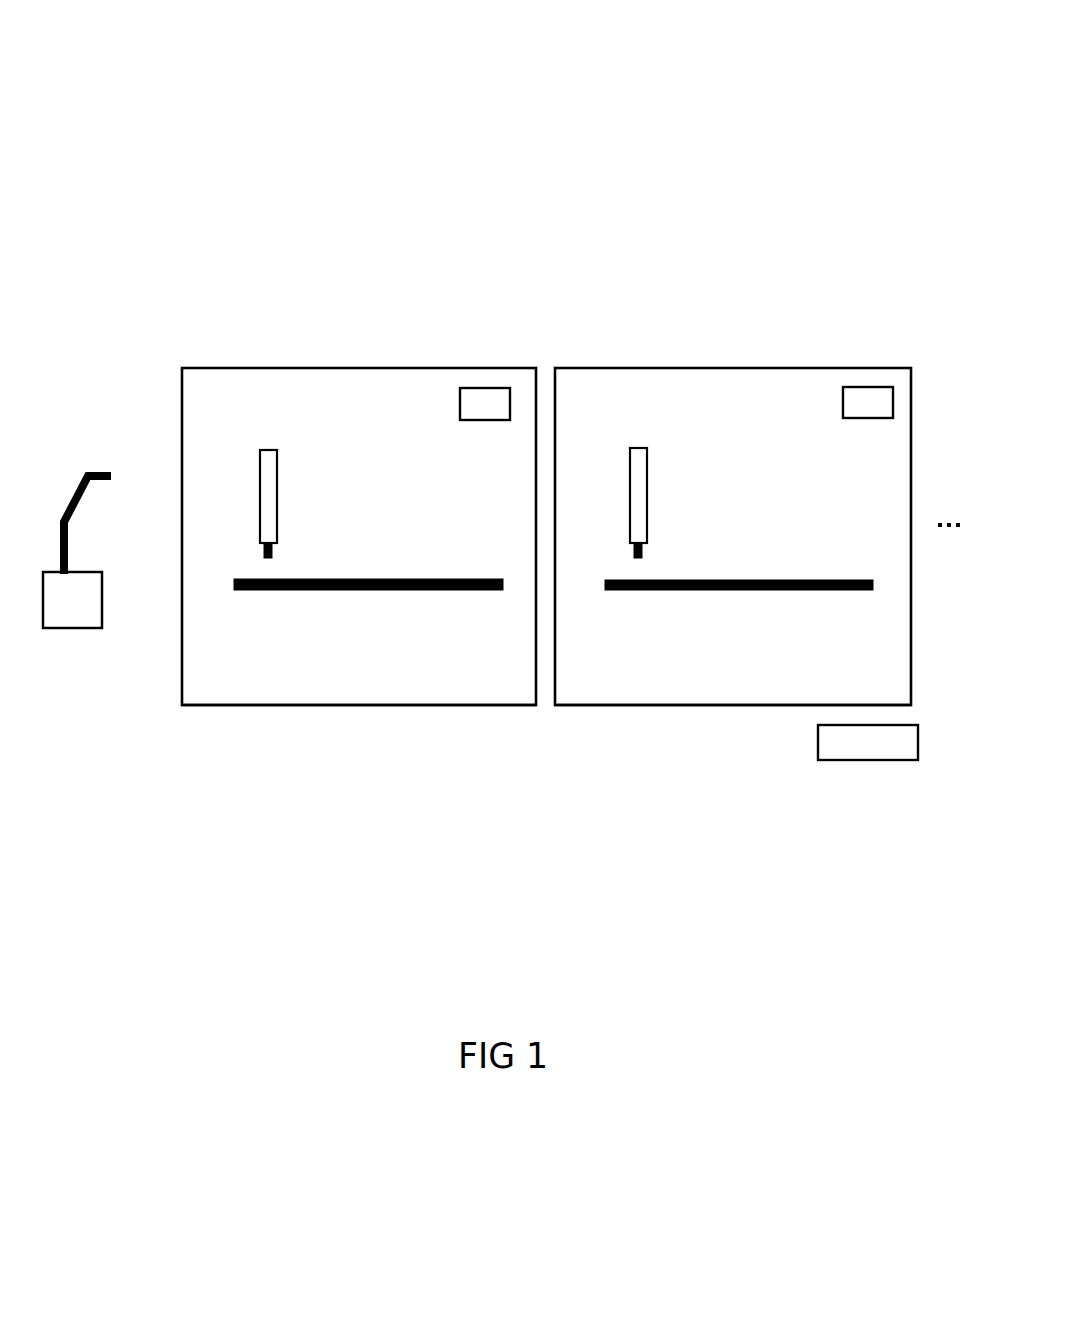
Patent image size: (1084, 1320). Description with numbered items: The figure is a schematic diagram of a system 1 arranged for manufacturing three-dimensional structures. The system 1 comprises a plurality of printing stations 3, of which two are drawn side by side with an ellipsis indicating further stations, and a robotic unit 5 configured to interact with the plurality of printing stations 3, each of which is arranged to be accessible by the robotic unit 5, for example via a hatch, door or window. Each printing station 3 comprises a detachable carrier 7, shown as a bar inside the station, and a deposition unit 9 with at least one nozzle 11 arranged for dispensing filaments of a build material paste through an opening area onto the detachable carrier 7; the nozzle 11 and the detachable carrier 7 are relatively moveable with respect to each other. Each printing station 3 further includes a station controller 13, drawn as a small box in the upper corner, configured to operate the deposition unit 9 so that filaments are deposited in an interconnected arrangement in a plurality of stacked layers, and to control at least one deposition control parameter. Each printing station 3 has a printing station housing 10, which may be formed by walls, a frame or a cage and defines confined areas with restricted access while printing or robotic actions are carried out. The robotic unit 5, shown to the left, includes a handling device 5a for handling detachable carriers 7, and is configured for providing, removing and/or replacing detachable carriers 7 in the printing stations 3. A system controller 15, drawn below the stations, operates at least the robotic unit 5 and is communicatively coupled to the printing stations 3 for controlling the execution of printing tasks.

The system 1 is at (296, 126).
The printing station 3 is at (339, 350).
The robotic unit 5 is at (84, 507).
The handling device 5a is at (102, 503).
The detachable carrier 7 is at (333, 596).
The deposition unit 9 is at (284, 486).
The printing station housing 10 is at (257, 715).
The nozzle 11 is at (285, 546).
The station controller 13 is at (500, 380).
The system controller 15 is at (867, 774).